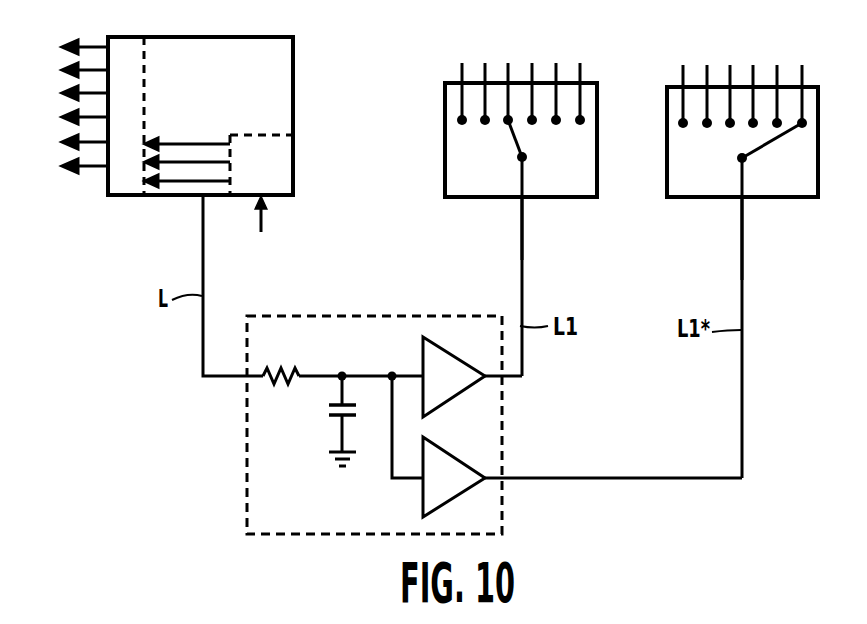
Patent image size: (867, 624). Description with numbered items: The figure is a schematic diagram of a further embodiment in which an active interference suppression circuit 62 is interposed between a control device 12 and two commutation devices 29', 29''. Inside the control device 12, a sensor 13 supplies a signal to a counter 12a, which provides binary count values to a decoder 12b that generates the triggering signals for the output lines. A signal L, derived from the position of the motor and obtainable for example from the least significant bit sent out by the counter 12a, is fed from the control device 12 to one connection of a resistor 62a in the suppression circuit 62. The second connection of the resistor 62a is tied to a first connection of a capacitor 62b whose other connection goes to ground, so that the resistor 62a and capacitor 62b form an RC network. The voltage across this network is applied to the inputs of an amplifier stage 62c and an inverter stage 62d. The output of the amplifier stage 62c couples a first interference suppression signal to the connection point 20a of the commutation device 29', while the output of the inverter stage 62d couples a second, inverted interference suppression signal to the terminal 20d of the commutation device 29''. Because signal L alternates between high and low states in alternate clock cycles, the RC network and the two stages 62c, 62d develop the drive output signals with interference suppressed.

The control device 12 is at (233, 37).
The counter 12a is at (272, 133).
The decoder 12b is at (146, 66).
The sensor 13 is at (260, 227).
The commutation device 29' is at (510, 142).
The commutation device 29'' is at (742, 149).
The connection point 20a is at (520, 253).
The terminal 20d is at (741, 275).
The active interference suppression circuit 62 is at (247, 450).
The resistor 62a is at (294, 372).
The capacitor 62b is at (332, 420).
The amplifier stage 62c is at (458, 397).
The inverter stage 62d is at (458, 497).